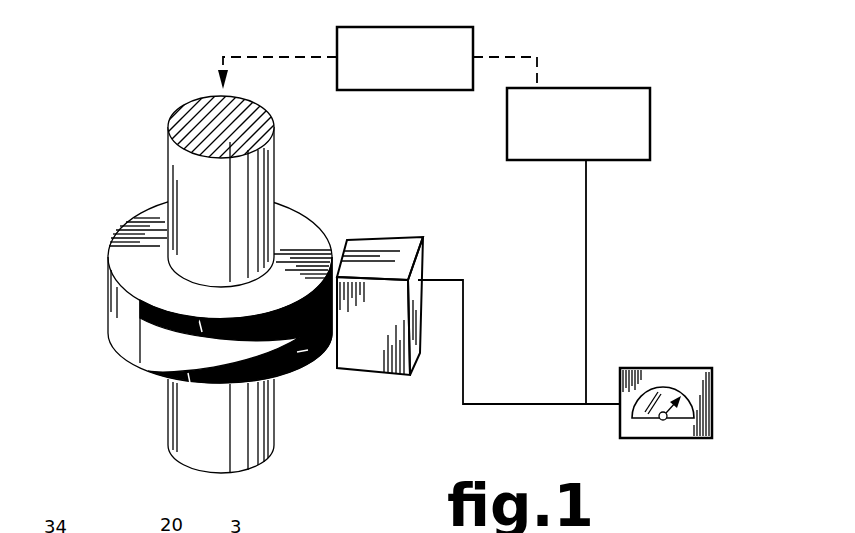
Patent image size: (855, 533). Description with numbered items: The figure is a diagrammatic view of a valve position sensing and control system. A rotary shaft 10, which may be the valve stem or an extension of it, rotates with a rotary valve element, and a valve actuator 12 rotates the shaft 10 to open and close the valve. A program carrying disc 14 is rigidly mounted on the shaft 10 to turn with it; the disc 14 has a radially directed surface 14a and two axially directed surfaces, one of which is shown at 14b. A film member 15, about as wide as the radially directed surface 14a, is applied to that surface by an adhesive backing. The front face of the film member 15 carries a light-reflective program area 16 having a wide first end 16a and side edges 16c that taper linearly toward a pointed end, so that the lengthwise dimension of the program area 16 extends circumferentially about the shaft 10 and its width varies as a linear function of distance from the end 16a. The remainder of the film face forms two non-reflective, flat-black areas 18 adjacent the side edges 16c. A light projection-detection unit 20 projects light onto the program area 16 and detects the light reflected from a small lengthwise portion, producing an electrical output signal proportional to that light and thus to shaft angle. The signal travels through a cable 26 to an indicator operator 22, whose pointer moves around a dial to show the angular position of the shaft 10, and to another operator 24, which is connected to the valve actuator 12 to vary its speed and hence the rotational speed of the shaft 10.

The rotary shaft 10 is at (271, 446).
The valve actuator 12 is at (473, 33).
The program carrying disc 14 is at (104, 219).
The radially directed surface 14a is at (118, 308).
The axially directed surface 14b is at (150, 212).
The film member 15 is at (287, 390).
The program area 16 is at (163, 358).
The wide first end 16a is at (138, 335).
The side edges 16c is at (207, 318).
The non-reflective areas 18 is at (300, 355).
The light projection-detection unit 20 is at (423, 236).
The indicator operator 22 is at (656, 368).
The operator 24 is at (650, 95).
The cable 26 is at (587, 245).